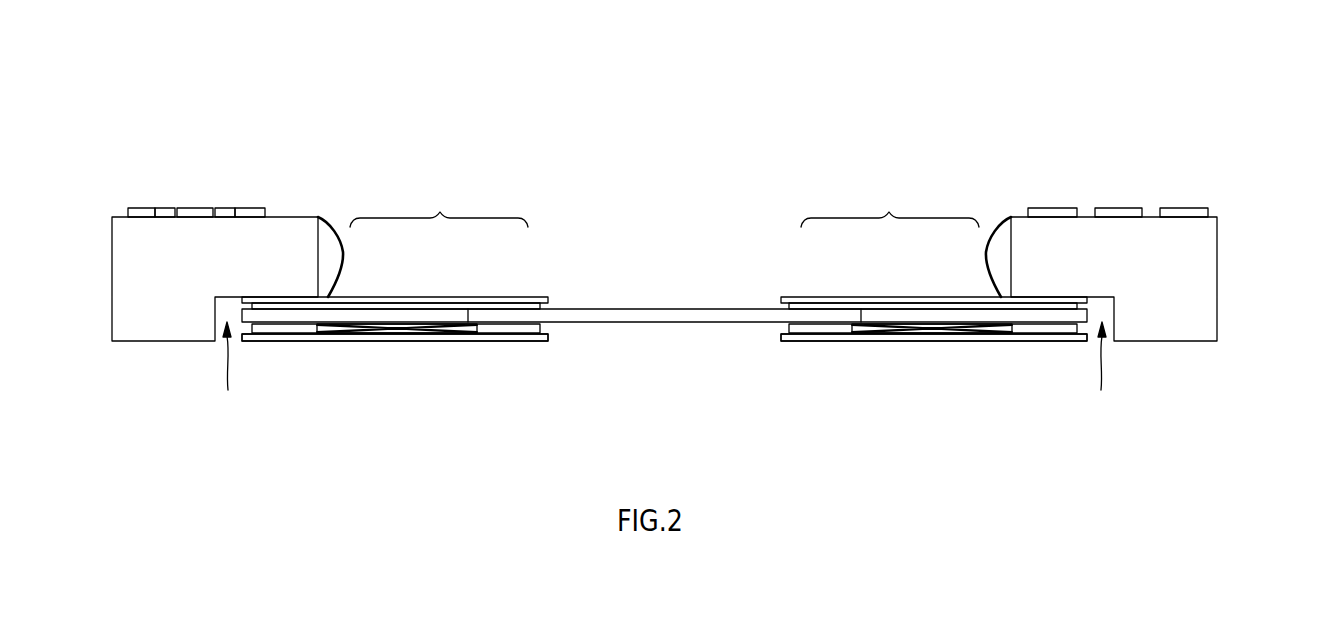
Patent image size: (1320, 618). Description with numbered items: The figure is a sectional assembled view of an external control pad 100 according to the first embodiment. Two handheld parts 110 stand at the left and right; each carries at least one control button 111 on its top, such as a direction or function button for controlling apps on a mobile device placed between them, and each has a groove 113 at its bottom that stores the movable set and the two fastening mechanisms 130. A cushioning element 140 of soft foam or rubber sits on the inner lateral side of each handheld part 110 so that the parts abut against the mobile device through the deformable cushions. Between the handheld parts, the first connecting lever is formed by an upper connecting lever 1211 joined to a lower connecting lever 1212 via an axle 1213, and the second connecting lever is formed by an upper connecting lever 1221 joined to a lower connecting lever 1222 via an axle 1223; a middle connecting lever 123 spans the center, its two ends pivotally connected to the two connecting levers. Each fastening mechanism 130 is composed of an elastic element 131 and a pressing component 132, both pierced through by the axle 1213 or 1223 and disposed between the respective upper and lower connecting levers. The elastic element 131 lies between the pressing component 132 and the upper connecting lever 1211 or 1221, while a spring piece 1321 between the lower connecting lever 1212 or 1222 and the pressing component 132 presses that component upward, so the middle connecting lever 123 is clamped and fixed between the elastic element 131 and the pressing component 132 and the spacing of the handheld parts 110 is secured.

The external control pad 100 is at (72, 71).
The handheld part 110 is at (135, 272).
The control button 111 is at (197, 214).
The groove 113 is at (664, 370).
The middle connecting lever 123 is at (666, 311).
The fastening mechanism 130 is at (664, 206).
The elastic element 131 is at (289, 303).
The pressing component 132 is at (305, 330).
The spring piece 1321 is at (418, 328).
The cushioning element 140 is at (327, 220).
The upper connecting lever 1211 is at (548, 297).
The lower connecting lever 1212 is at (368, 341).
The axle 1213 is at (282, 341).
The upper connecting lever 1221 is at (781, 297).
The lower connecting lever 1222 is at (961, 341).
The axle 1223 is at (822, 341).